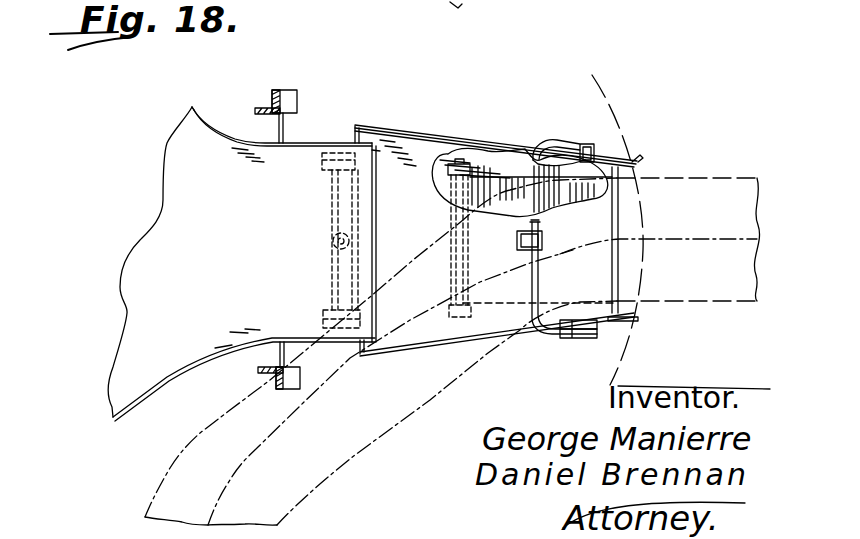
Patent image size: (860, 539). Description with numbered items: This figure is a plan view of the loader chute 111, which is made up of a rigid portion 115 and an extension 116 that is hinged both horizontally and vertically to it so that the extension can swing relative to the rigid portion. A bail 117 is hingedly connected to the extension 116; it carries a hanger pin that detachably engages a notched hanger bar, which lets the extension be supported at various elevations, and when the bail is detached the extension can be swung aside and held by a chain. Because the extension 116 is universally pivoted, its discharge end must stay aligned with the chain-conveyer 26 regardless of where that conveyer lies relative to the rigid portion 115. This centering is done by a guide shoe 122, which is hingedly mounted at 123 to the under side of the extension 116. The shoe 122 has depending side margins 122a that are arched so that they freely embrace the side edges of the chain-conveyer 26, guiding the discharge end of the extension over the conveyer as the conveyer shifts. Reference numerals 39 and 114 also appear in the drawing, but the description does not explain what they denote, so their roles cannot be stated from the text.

The rigid portion 115 is at (182, 173).
The loader chute 111 is at (355, 118).
The extension 116 is at (418, 356).
The guide shoe 122 is at (493, 181).
The depending side margins 122a is at (659, 333).
The hinge mounting 123 is at (457, 178).
The bail 117 is at (545, 343).
The chain-conveyer 26 is at (677, 177).
The hull wall 39 is at (601, 192).
The pipe connection 114 is at (478, 6).